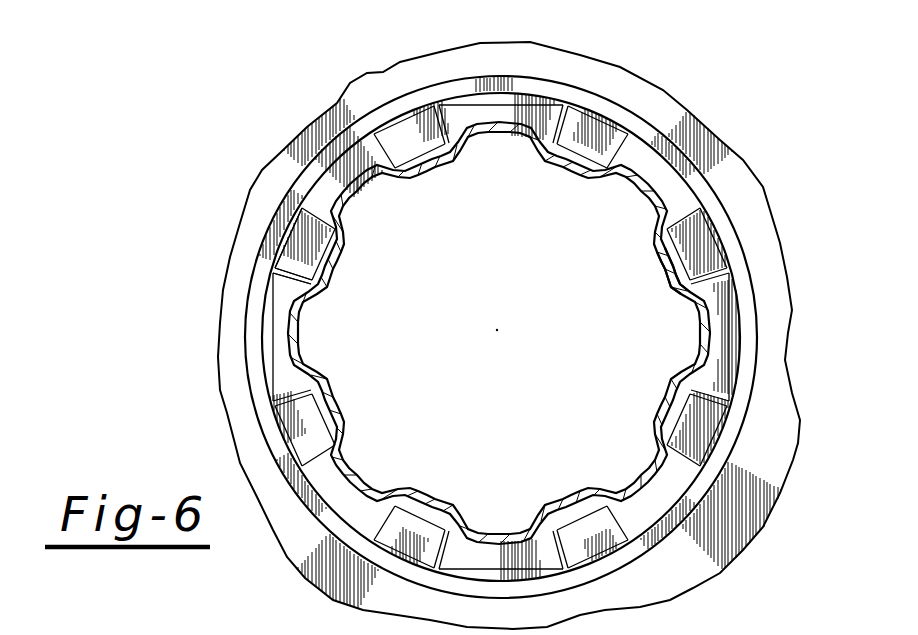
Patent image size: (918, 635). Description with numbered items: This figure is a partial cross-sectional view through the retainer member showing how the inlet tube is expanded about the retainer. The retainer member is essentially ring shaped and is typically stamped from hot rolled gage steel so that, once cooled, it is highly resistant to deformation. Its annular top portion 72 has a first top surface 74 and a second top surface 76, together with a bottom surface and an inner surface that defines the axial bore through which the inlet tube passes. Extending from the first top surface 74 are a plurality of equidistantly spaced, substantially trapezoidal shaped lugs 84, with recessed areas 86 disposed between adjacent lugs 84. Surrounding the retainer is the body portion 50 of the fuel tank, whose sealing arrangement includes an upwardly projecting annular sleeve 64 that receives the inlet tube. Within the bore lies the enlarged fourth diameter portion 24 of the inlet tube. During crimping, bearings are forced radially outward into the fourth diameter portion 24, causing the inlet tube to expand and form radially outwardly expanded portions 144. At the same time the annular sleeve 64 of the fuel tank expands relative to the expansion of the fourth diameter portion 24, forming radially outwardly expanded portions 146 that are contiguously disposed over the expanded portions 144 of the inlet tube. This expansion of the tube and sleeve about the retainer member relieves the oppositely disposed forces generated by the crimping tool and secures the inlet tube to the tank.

The fourth diameter portion 24 is at (499, 333).
The body portion 50 is at (667, 110).
The annular sleeve 64 is at (665, 268).
The annular top portion 72 is at (290, 273).
The first top surface 74 is at (277, 373).
The second top surface 76 is at (253, 307).
The lugs 84 is at (310, 257).
The recessed areas 86 is at (357, 160).
The radially outwardly expanded portions 144 is at (645, 202).
The radially outwardly expanded portions 146 is at (652, 208).